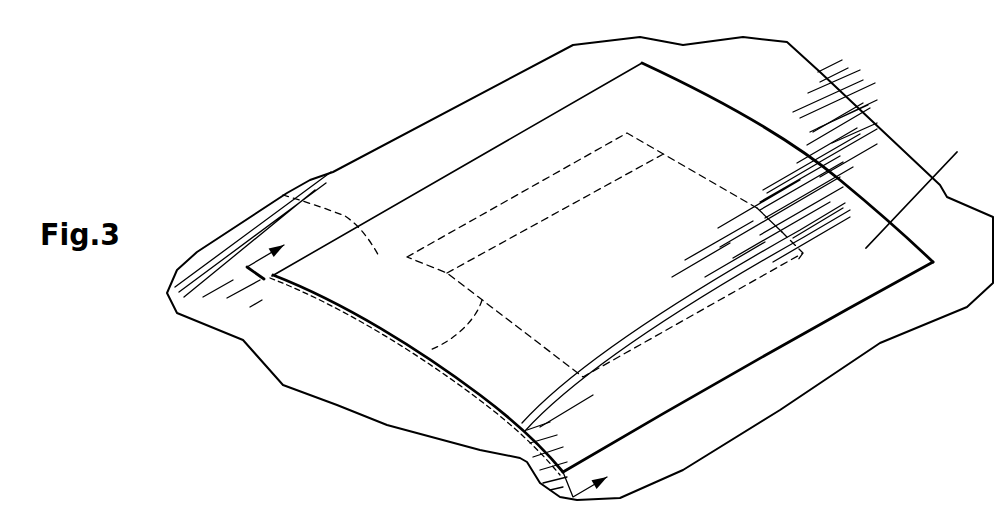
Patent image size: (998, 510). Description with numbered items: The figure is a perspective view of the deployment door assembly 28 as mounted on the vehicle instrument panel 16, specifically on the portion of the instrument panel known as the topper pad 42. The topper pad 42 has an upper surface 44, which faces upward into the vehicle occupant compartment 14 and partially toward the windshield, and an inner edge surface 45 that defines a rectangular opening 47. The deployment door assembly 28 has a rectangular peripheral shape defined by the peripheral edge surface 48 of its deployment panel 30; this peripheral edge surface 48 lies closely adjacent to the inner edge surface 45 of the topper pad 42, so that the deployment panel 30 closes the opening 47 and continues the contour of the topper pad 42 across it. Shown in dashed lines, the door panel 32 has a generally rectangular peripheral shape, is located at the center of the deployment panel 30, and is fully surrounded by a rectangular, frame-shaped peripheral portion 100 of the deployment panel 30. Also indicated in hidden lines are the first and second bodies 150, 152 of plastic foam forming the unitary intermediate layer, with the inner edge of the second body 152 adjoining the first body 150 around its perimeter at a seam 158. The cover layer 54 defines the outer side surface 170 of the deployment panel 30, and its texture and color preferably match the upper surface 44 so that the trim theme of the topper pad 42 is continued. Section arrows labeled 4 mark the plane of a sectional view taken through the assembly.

The vehicle occupant compartment 14 is at (866, 58).
The vehicle instrument panel 16 is at (334, 174).
The deployment door assembly 28 is at (701, 78).
The deployment panel 30 is at (820, 198).
The door panel 32 is at (562, 247).
The topper pad 42 is at (395, 180).
The upper surface 44 is at (437, 163).
The inner edge surface 45 is at (497, 148).
The rectangular opening 47 is at (591, 113).
The peripheral edge surface 48 is at (483, 410).
The cover layer 54 is at (377, 317).
The frame-shaped peripheral portion 100 is at (924, 188).
The first body of plastic foam 150 is at (480, 233).
The second body of plastic foam 152 is at (283, 195).
The seam 158 is at (430, 350).
The outer side surface 170 is at (103, 500).
The section line 4- 4 is at (436, 363).